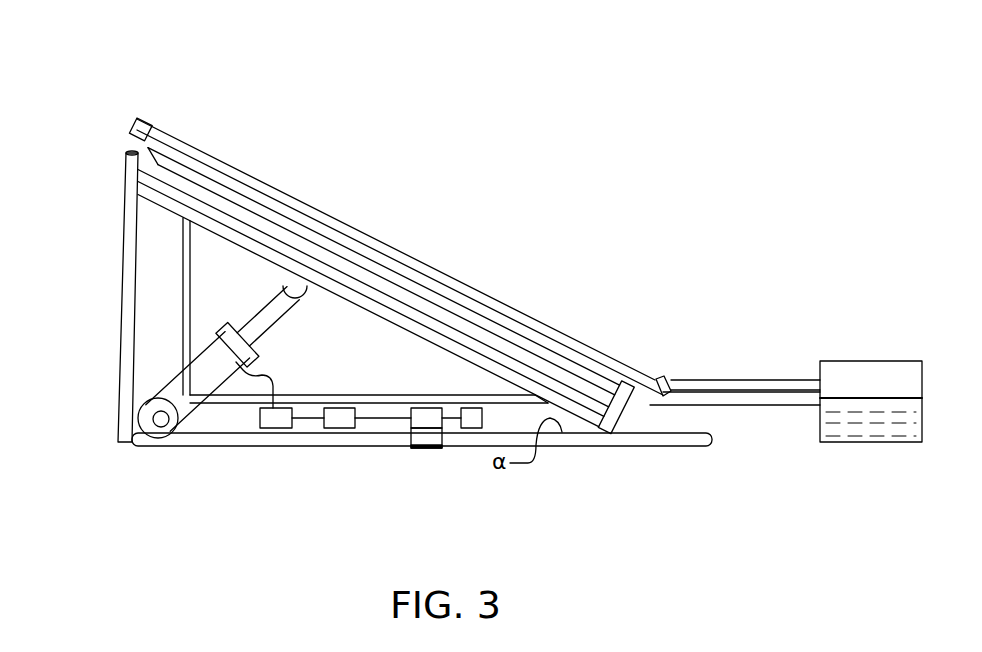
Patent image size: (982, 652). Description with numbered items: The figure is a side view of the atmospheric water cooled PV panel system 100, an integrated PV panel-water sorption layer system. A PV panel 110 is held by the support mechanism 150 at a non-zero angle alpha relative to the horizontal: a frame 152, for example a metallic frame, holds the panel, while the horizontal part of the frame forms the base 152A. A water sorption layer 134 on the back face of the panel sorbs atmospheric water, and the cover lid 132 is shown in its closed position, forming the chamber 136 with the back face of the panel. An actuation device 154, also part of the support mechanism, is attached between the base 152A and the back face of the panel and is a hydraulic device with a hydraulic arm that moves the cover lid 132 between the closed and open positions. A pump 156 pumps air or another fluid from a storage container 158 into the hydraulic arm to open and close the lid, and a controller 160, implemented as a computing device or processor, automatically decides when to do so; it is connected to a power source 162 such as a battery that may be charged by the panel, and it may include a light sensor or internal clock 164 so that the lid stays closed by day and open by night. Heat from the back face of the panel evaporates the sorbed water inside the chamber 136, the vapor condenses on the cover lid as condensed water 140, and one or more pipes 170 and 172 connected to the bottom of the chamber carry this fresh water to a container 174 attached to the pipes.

The atmospheric water cooled PV panel system 100 is at (772, 46).
The PV panel 110 is at (497, 290).
The cover lid 132 is at (383, 395).
The water sorption layer 134 is at (217, 183).
The chamber 136 is at (628, 396).
The condensed water 140 is at (611, 432).
The support mechanism 150 is at (112, 333).
The frame 152 is at (120, 388).
The base 152A is at (560, 444).
The actuation device 154 is at (200, 387).
The pump 156 is at (338, 408).
The storage container 158 is at (383, 395).
The controller 160 is at (425, 408).
The power source 162 is at (470, 408).
The light sensor or internal clock 164 is at (427, 449).
The pipe 170 is at (736, 400).
The pipe 172 is at (736, 381).
The container 174 is at (872, 361).